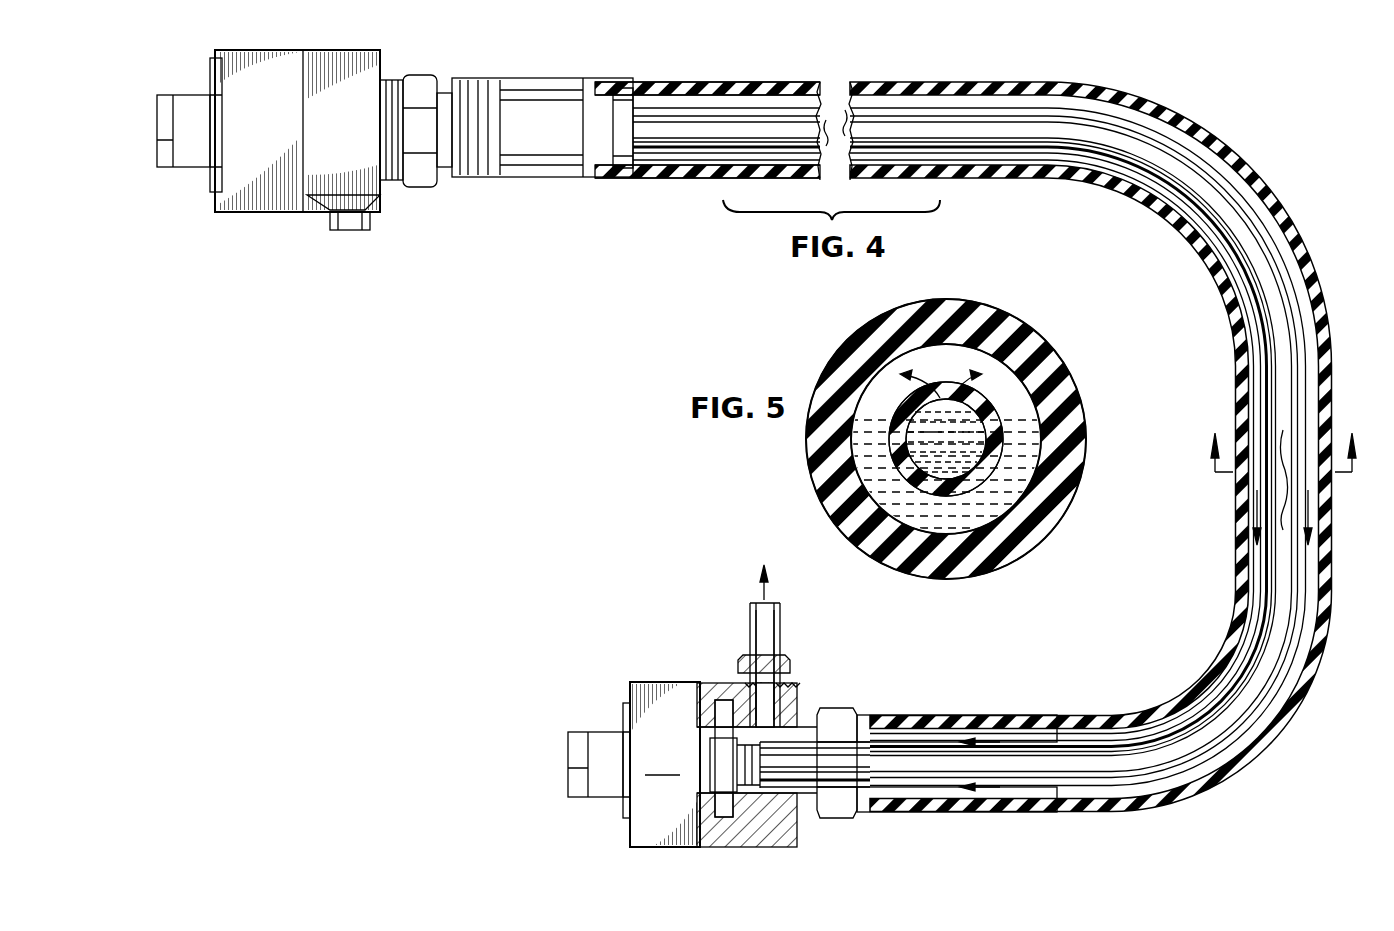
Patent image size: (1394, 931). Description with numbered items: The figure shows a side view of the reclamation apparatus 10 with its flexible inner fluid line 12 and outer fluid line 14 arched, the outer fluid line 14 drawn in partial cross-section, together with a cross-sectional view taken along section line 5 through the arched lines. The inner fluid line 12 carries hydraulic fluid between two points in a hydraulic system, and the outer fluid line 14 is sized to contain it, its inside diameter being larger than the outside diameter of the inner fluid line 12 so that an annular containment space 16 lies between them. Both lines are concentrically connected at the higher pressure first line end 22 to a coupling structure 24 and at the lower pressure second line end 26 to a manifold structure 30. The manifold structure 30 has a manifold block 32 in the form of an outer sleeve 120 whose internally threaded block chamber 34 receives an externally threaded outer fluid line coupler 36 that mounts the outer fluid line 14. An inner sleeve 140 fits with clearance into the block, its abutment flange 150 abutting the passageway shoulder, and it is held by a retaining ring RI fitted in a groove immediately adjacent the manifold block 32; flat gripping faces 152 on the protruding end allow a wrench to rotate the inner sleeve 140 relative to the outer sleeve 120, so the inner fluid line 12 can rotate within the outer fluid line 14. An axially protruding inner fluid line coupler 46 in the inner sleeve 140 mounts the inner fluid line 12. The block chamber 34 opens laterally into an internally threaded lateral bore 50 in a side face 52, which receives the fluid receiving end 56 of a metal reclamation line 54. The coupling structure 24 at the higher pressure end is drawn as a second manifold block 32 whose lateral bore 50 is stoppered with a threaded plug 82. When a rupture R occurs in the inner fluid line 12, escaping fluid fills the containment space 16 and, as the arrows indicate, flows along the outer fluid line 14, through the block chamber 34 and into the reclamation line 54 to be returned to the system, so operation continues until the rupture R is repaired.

In FIG. 4, the reclamation apparatus 10 is at (1215, 120).
In FIG. 5, the reclamation apparatus 10 is at (1060, 330).
In FIG. 4, the inner fluid line 12 is at (1285, 290).
In FIG. 5, the inner fluid line 12 is at (1005, 415).
In FIG. 4, the outer fluid line 14 is at (1290, 222).
In FIG. 5, the outer fluid line 14 is at (1078, 488).
In FIG. 4, the annular containment space 16 is at (1308, 338).
In FIG. 5, the annular containment space 16 is at (975, 352).
In FIG. 4, the first line end 22 is at (530, 175).
In FIG. 4, the coupling structure 24 is at (375, 50).
In FIG. 4, the second line end 26 is at (922, 805).
In FIG. 4, the manifold structure 30 is at (640, 682).
In FIG. 4, the manifold block 32 is at (663, 682).
In FIG. 4, the block chamber 34 is at (775, 847).
In FIG. 4, the outer fluid line coupler 36 is at (415, 82).
In FIG. 4, the inner fluid line coupler 46 is at (735, 765).
In FIG. 4, the lateral bore 50 is at (335, 205).
In FIG. 4, the side face 52 is at (253, 212).
In FIG. 4, the reclamation line 54 is at (790, 640).
In FIG. 4, the fluid receiving end 56 is at (768, 622).
In FIG. 4, the threaded plug 82 is at (365, 222).
In FIG. 4, the outer sleeve 120 is at (664, 763).
In FIG. 4, the inner sleeve 140 is at (192, 93).
In FIG. 4, the abutment flange 150 is at (725, 705).
In FIG. 4, the flat gripping faces 152 is at (162, 148).
In FIG. 4, the retaining ring RI is at (210, 178).
In FIG. 5, the rupture R is at (950, 398).
In FIG. 4, the section line 5- 5 is at (1283, 468).